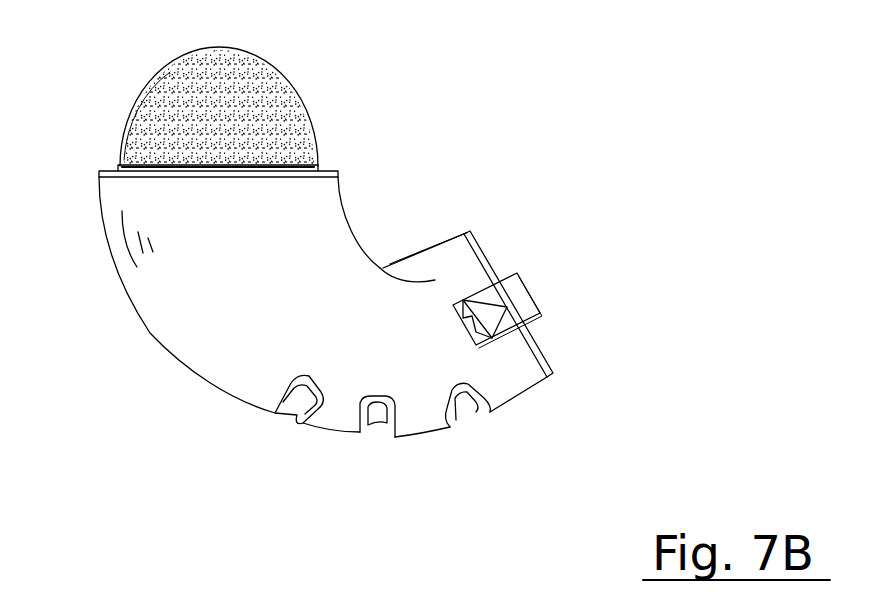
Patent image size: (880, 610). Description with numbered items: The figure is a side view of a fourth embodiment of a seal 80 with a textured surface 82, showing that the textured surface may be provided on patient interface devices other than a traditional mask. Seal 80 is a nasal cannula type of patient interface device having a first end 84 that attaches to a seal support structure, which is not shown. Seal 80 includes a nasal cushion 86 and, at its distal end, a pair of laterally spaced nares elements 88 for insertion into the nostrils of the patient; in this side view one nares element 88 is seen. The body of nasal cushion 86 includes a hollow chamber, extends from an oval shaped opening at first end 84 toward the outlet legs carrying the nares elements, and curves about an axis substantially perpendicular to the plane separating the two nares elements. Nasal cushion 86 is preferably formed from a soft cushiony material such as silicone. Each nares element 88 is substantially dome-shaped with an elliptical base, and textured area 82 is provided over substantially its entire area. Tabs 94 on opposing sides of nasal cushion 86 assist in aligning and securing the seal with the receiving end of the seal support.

The seal 80 is at (222, 353).
The textured surface 82 is at (268, 101).
The first end 84 is at (543, 350).
The nasal cushion 86 is at (420, 260).
The nares elements 88 is at (172, 84).
The tabs 94 is at (517, 281).